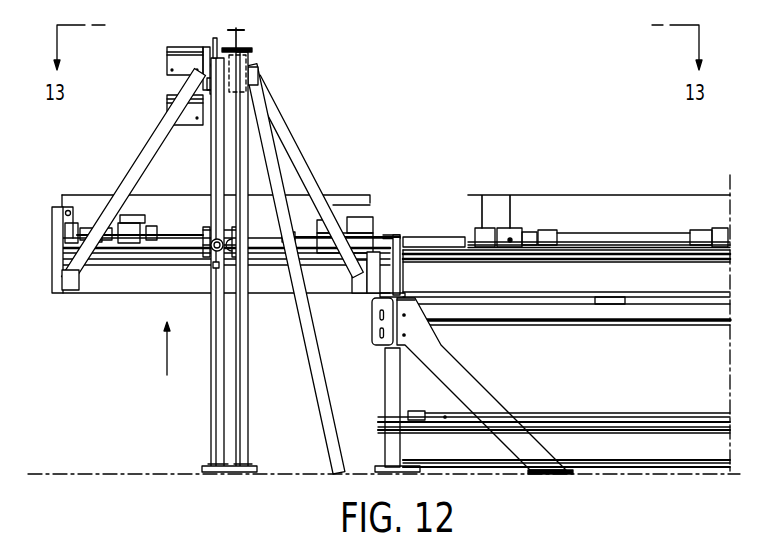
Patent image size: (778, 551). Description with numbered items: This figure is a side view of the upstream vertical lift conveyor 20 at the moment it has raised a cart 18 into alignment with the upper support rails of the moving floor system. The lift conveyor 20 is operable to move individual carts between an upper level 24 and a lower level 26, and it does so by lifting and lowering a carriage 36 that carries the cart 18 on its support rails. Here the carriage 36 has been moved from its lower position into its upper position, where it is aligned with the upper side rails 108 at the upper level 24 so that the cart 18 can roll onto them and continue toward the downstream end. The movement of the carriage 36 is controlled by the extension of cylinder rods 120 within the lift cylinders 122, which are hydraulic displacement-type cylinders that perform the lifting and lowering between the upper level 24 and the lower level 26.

The cart 18 is at (342, 195).
The upstream vertical lift conveyor 20 is at (304, 126).
The upper level 24 is at (722, 214).
The lower level 26 is at (720, 432).
The carriage 36 is at (56, 258).
The upper side rails 108 is at (655, 255).
The cylinder rods 120 is at (203, 178).
The lift cylinders 122 is at (211, 410).